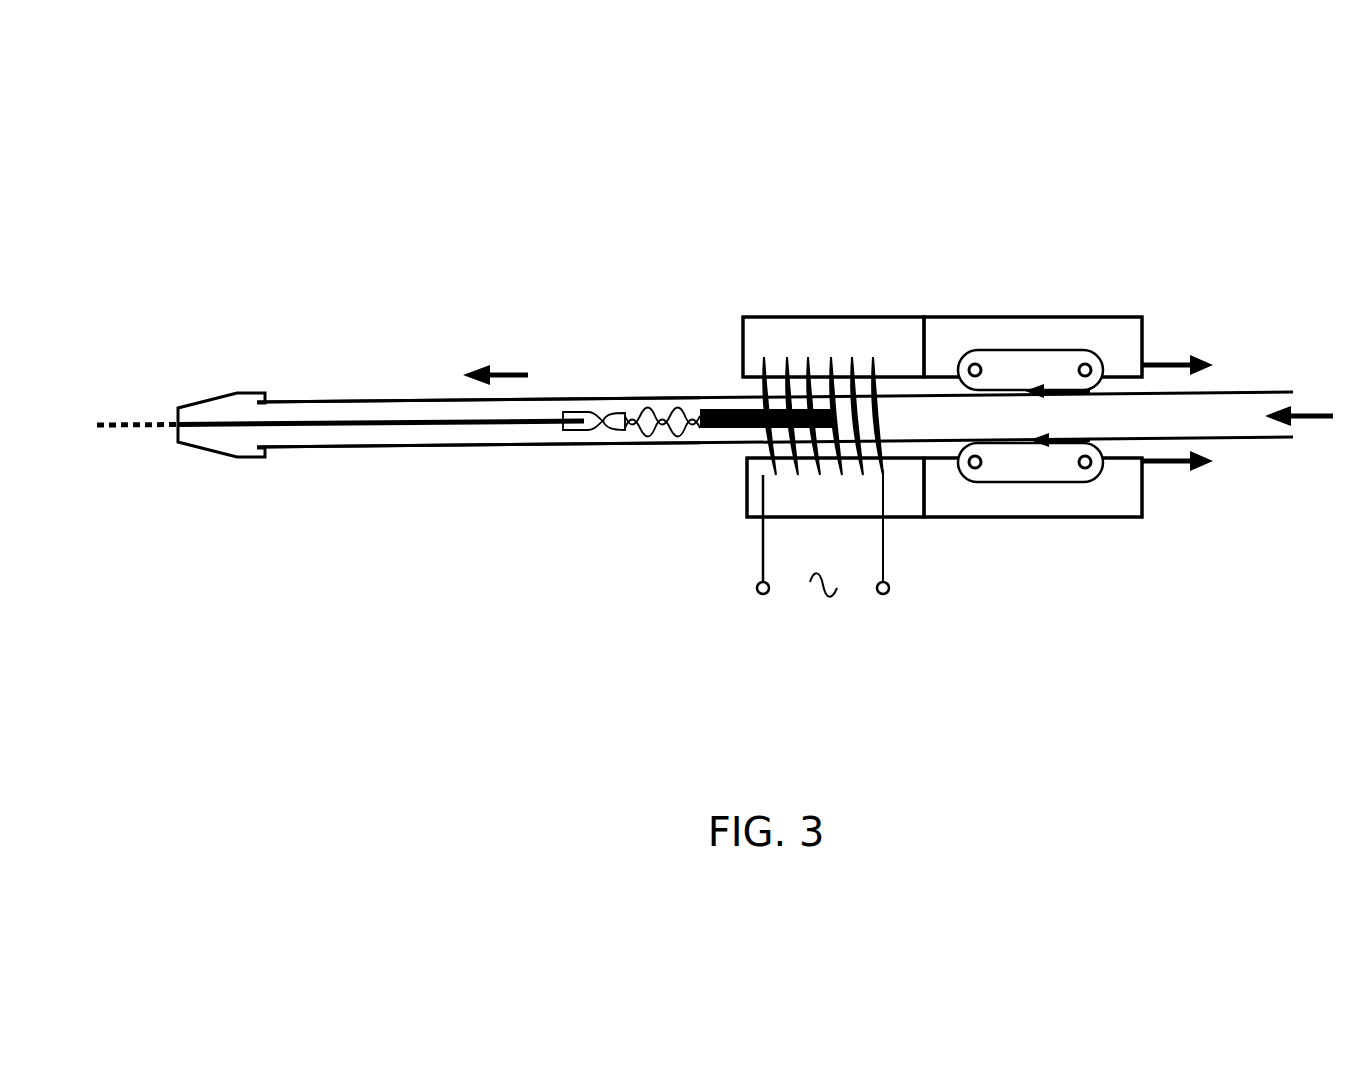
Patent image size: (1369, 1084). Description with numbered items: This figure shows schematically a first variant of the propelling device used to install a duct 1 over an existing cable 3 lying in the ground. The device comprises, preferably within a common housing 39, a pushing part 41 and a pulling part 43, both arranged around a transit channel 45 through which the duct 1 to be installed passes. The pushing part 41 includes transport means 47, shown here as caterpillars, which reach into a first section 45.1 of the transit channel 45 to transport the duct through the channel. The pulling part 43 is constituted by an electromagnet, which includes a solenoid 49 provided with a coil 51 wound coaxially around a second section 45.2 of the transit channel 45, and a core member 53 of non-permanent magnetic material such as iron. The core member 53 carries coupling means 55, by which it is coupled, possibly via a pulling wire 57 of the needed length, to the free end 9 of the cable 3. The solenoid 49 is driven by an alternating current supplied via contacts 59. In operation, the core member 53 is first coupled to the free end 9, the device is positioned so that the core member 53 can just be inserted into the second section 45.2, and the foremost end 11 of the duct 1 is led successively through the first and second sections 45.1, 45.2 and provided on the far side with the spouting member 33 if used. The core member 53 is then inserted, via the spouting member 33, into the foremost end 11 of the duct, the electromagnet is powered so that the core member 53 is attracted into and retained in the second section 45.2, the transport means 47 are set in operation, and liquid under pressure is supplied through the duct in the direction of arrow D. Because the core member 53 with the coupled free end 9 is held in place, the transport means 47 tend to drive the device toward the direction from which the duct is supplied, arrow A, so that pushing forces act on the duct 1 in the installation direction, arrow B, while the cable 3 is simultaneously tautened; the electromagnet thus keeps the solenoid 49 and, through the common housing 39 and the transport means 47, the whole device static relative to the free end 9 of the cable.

The duct 1 is at (1253, 445).
The cable 3 is at (118, 440).
The free end 9 is at (405, 415).
The foremost end 11 is at (328, 452).
The spouting member 33 is at (226, 459).
The common housing 39 is at (935, 317).
The pushing part 41 is at (1134, 310).
The pulling part 43 is at (766, 310).
The transit channel 45 is at (918, 455).
The first section of the transit channel 45.1 is at (1128, 482).
The second section of the transit channel 45.2 is at (750, 396).
The transport means 47 is at (1012, 478).
The solenoid 49 is at (800, 345).
The coil 51 is at (855, 370).
The core member 53 is at (735, 432).
The coupling means 55 is at (575, 412).
The pulling wire 57 is at (648, 432).
The contacts 59 is at (770, 593).
The arrow A is at (1170, 472).
The arrow B is at (517, 368).
The arrow D is at (1320, 405).